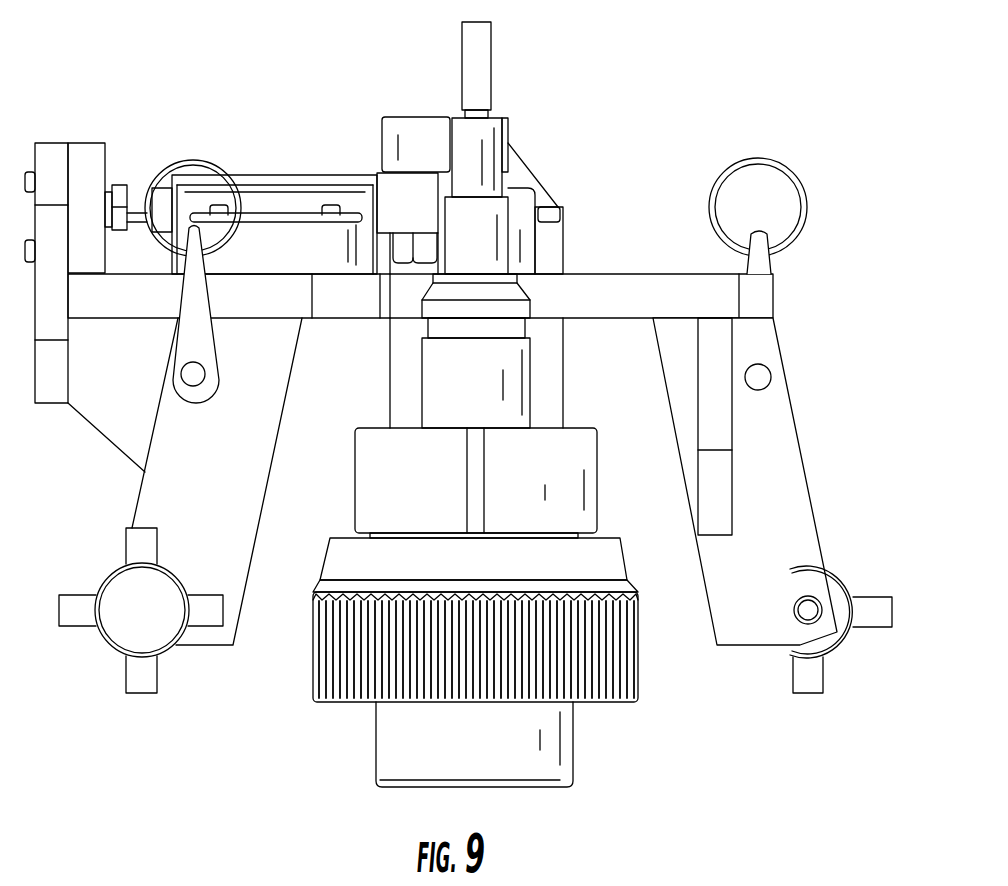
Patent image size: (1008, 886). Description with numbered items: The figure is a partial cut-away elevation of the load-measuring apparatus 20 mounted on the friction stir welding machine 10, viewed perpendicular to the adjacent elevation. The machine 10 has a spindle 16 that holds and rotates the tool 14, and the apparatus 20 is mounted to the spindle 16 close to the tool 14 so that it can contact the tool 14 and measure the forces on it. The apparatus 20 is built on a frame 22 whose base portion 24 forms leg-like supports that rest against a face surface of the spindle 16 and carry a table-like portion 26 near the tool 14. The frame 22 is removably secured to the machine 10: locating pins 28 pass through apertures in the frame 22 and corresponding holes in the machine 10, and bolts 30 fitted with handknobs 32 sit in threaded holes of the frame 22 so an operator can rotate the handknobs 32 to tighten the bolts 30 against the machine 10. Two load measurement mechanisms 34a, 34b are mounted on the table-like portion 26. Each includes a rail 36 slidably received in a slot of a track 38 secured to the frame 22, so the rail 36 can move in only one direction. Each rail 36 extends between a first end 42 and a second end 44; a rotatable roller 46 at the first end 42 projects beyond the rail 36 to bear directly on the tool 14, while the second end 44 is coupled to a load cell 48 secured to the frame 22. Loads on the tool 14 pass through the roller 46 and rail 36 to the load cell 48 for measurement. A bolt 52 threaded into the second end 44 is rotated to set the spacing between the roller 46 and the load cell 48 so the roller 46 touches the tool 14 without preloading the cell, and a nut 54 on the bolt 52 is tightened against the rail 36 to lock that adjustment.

The friction stir welding machine 10 is at (660, 743).
The tool 14 is at (484, 43).
The spindle 16 is at (388, 741).
The apparatus 20 is at (665, 119).
The frame 22 is at (773, 302).
The base portion 24 is at (138, 496).
The table-like portion 26 is at (625, 274).
The locating pins 28 is at (180, 385).
The bolts 30 is at (812, 624).
The handknobs 32 is at (120, 633).
The load measurement mechanism 34a is at (233, 131).
The load measurement mechanism 34b is at (541, 159).
The rail 36 is at (310, 177).
The track 38 is at (270, 199).
The first end 42 is at (383, 195).
The second end 44 is at (190, 168).
The roller 46 is at (415, 117).
The load cell 48 is at (86, 152).
The bolt 52 is at (118, 188).
The nut 54 is at (160, 189).